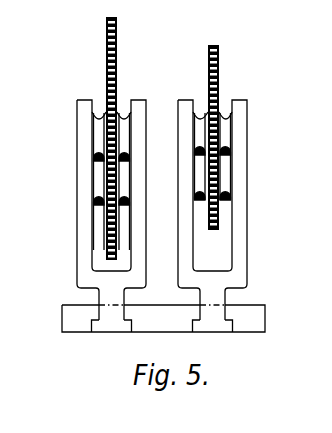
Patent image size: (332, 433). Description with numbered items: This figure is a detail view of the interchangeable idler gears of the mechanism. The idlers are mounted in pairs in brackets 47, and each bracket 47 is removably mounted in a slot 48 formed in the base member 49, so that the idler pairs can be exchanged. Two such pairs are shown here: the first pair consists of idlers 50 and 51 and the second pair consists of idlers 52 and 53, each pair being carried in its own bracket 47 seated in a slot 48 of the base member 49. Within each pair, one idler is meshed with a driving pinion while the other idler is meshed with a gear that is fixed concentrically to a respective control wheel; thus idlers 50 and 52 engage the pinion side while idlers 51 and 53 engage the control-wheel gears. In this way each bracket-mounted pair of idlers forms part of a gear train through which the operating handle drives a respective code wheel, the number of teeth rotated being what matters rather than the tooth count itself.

The bracket 47 is at (248, 270).
The slot 48 is at (232, 328).
The base member 49 is at (250, 312).
The idler 50 is at (107, 211).
The idler 51 is at (118, 42).
The idler 52 is at (212, 185).
The idler 53 is at (220, 73).